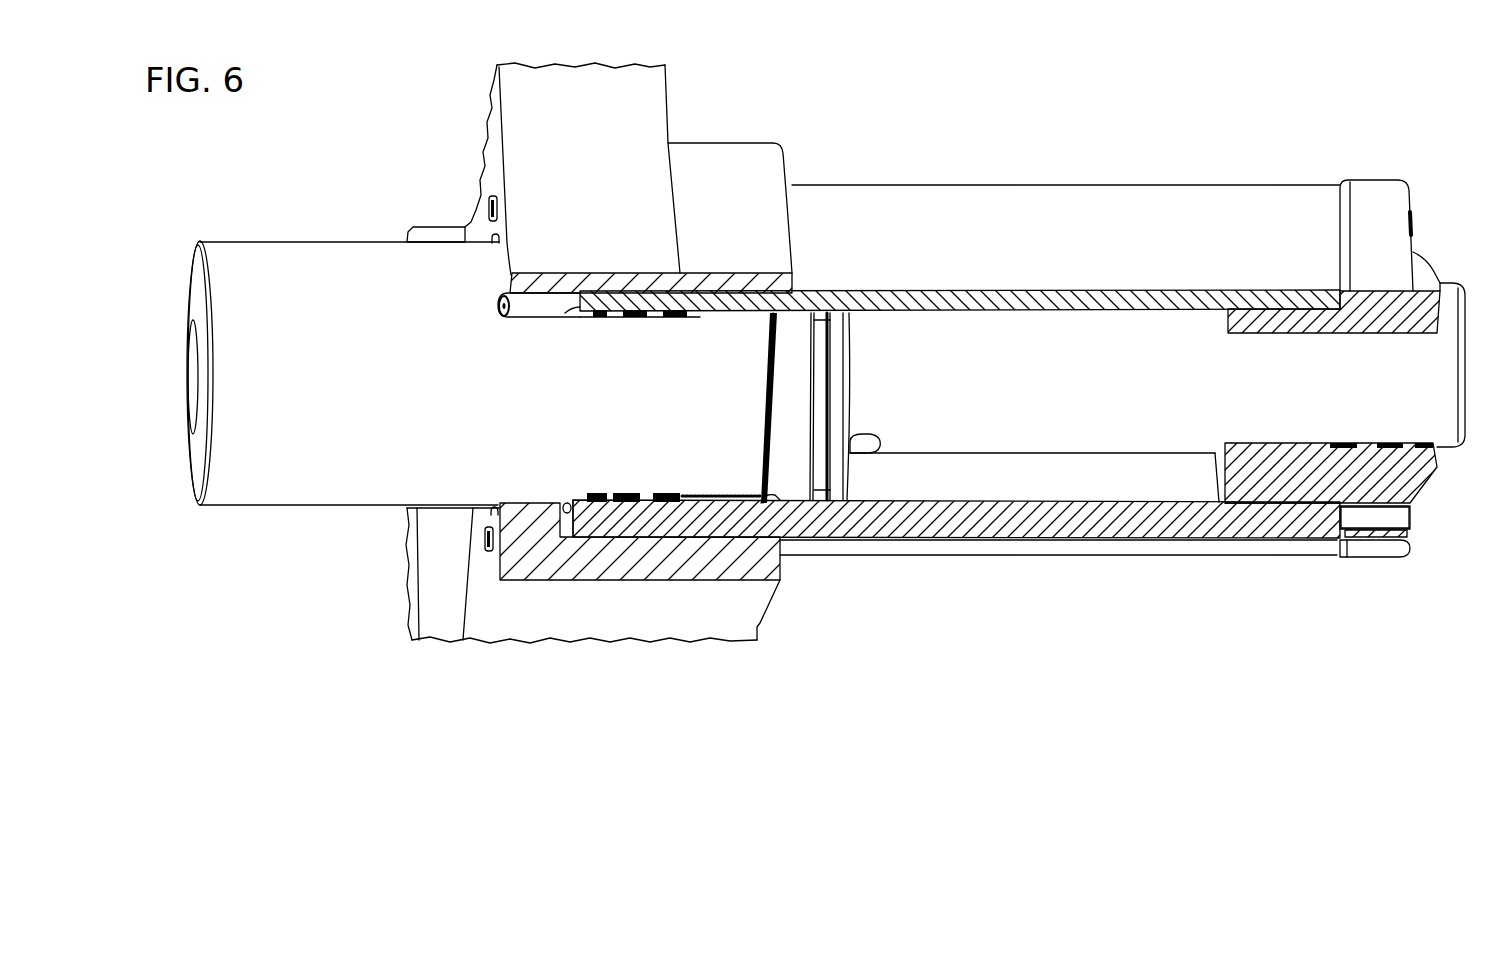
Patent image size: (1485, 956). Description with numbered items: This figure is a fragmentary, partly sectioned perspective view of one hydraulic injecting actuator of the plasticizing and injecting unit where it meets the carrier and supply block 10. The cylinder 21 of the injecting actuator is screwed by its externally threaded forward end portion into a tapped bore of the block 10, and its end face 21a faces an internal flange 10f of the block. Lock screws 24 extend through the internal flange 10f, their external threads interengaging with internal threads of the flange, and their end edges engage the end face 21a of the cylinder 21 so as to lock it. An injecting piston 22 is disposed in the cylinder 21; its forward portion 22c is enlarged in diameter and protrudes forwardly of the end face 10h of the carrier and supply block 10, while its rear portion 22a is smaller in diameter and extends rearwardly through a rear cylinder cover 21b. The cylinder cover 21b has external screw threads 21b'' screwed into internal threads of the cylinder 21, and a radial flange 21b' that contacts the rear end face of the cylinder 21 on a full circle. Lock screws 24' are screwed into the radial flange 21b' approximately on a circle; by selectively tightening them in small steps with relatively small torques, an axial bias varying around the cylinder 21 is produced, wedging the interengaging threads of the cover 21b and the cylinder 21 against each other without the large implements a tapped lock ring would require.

The carrier and supply block 10 is at (593, 381).
The end face 10h is at (492, 158).
The internal flange 10f is at (522, 503).
The lock screw 24 is at (483, 381).
The lock screw 24' is at (1402, 542).
The cylinder 21 is at (981, 403).
The end face 21a is at (570, 312).
The rear cylinder cover 21b is at (1311, 450).
The radial flange 21b' is at (1390, 399).
The external screw threads 21b'' is at (1282, 553).
The injecting piston 22 is at (826, 409).
The rear portion 22a is at (1108, 415).
The forward portion 22c is at (420, 397).